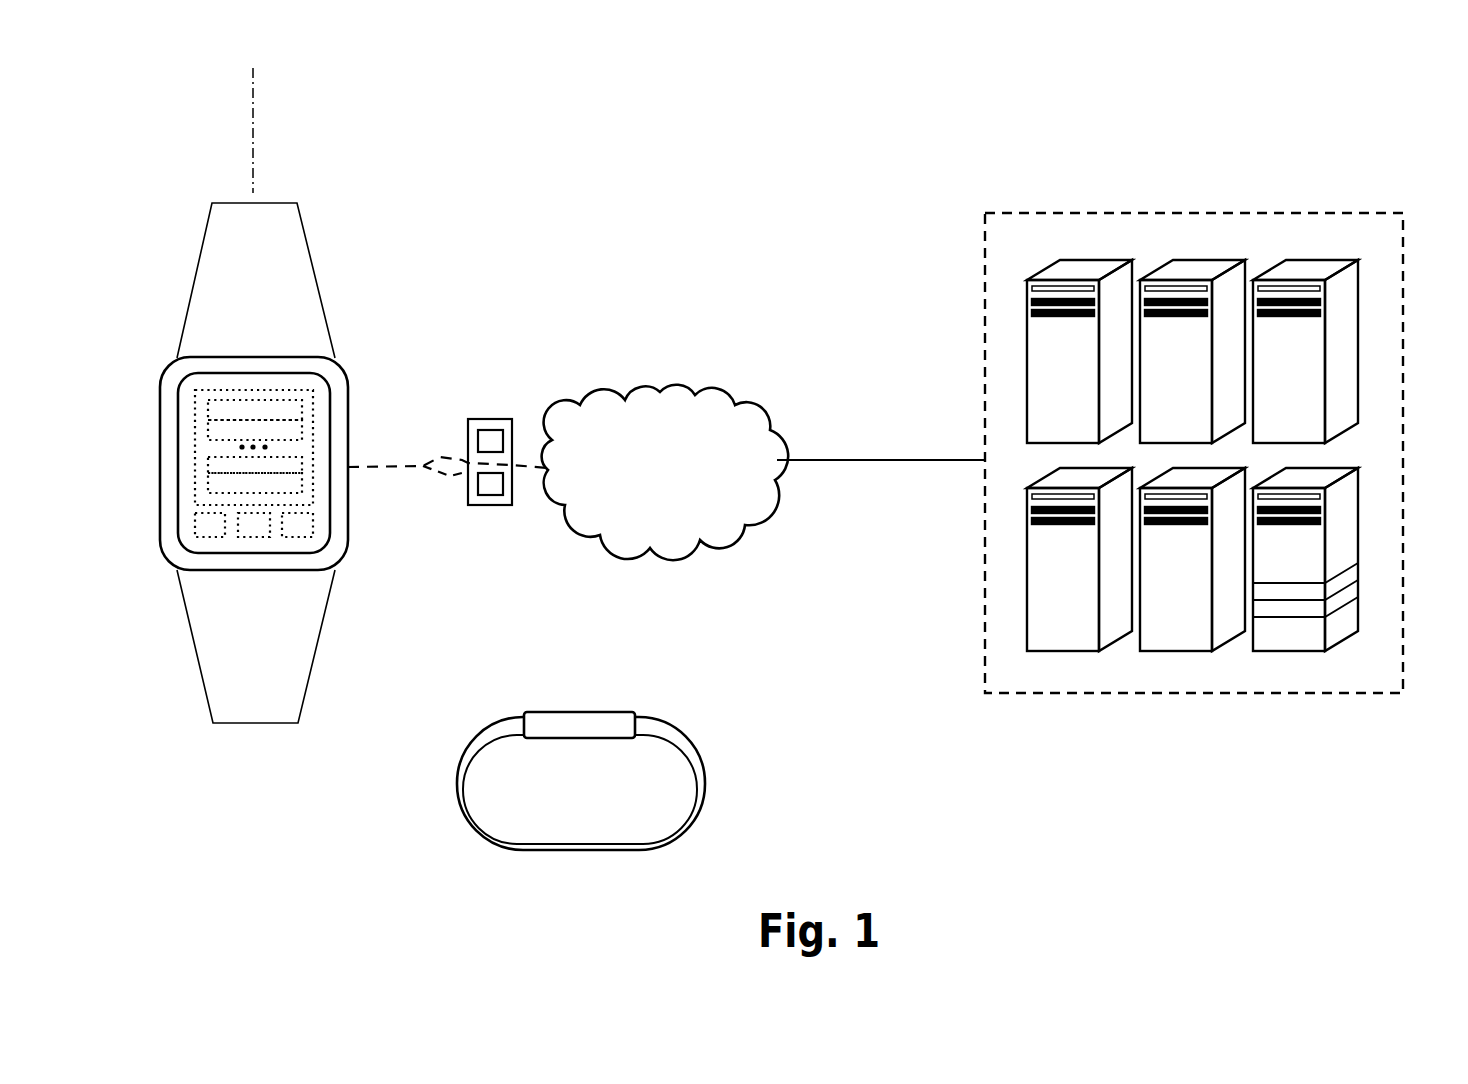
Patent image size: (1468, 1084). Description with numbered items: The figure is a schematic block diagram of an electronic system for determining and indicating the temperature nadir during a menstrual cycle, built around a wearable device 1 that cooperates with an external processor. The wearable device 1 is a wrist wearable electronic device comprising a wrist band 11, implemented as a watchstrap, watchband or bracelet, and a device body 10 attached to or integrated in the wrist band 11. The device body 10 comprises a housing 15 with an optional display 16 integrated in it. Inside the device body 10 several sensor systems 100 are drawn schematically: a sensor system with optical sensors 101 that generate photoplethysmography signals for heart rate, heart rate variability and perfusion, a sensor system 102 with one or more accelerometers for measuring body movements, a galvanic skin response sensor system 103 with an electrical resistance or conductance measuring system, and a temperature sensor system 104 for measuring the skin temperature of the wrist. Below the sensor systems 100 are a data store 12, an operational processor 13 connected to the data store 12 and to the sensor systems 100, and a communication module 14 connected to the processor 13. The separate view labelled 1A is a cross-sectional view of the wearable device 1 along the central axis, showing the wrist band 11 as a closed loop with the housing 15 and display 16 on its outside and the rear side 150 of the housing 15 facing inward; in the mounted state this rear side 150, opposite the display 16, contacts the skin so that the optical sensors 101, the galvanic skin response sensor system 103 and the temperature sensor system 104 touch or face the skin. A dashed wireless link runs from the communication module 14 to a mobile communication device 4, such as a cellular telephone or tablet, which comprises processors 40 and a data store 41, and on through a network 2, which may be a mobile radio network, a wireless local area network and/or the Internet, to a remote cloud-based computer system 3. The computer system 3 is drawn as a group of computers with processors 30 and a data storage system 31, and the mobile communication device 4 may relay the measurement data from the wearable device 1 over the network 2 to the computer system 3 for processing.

The wearable device 1 is at (409, 437).
The cross-sectional view of the wearable device 1A is at (548, 796).
The device body 10 is at (351, 520).
The wrist band 11 is at (303, 282).
The data store 12 is at (198, 530).
The operational processor 13 is at (247, 540).
The communication module 14 is at (307, 528).
The housing 15 is at (338, 437).
The display 16 is at (320, 483).
The sensor systems 100 is at (310, 398).
The optical sensors 101 is at (210, 410).
The sensor system with accelerometers 102 is at (208, 428).
The galvanic skin response sensor system 103 is at (210, 462).
The temperature sensor system 104 is at (210, 490).
The rear side 150 is at (591, 746).
The network 2 is at (610, 532).
The computer system 3 is at (1218, 464).
The processors 30 is at (1350, 576).
The data storage system 31 is at (1352, 594).
The mobile communication device 4 is at (492, 424).
The processors 40 is at (492, 488).
The data store 41 is at (498, 438).